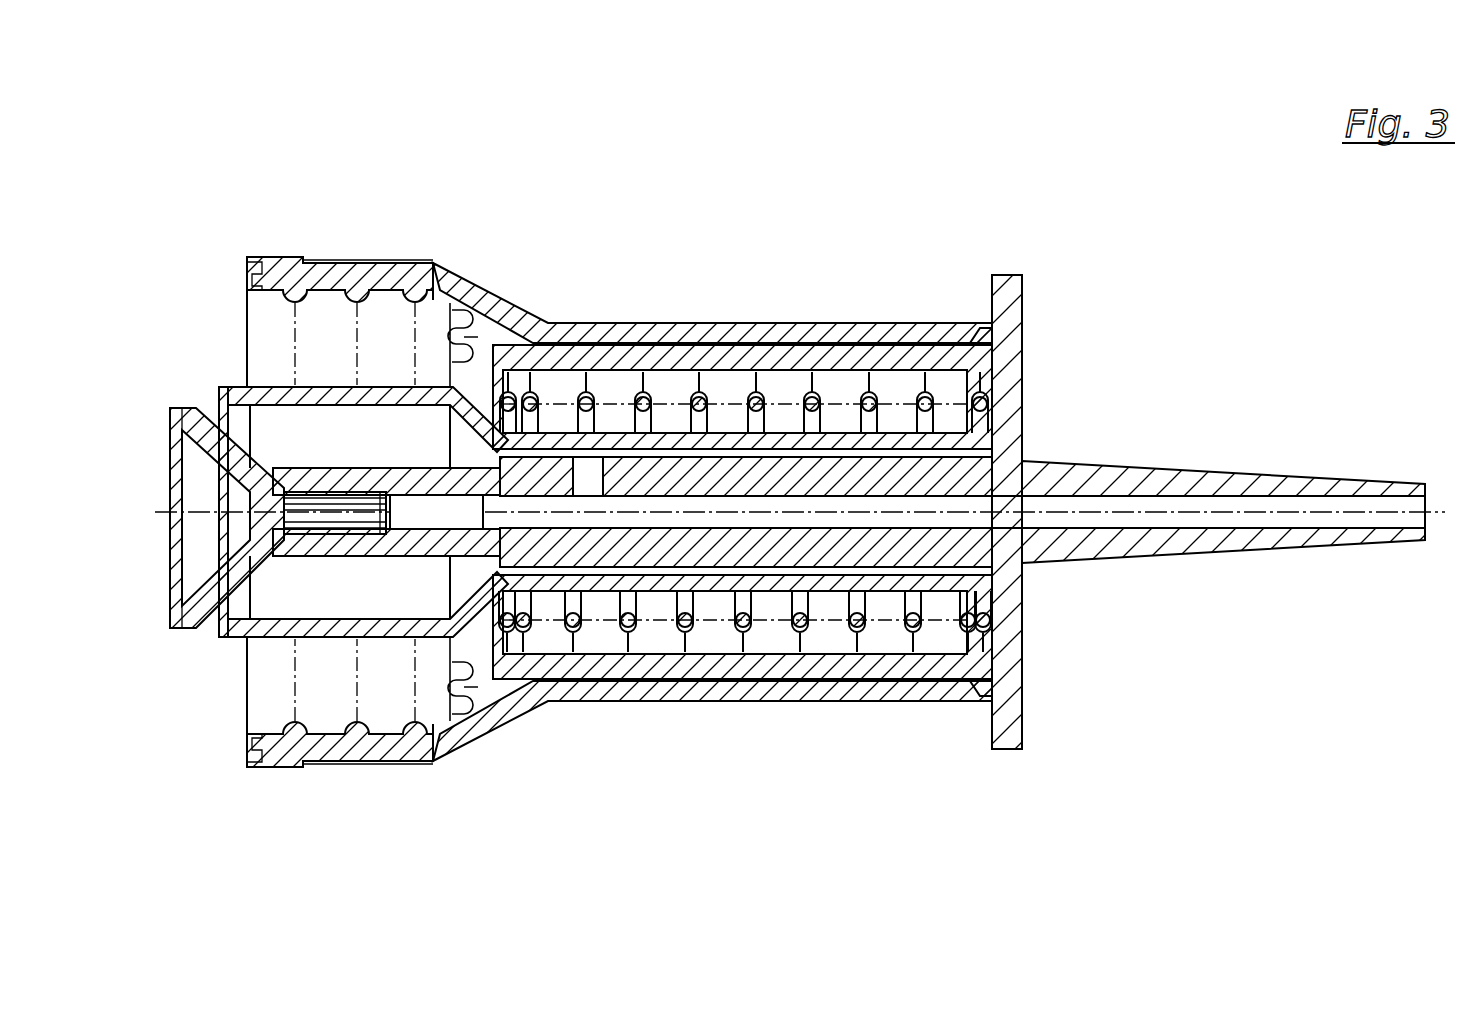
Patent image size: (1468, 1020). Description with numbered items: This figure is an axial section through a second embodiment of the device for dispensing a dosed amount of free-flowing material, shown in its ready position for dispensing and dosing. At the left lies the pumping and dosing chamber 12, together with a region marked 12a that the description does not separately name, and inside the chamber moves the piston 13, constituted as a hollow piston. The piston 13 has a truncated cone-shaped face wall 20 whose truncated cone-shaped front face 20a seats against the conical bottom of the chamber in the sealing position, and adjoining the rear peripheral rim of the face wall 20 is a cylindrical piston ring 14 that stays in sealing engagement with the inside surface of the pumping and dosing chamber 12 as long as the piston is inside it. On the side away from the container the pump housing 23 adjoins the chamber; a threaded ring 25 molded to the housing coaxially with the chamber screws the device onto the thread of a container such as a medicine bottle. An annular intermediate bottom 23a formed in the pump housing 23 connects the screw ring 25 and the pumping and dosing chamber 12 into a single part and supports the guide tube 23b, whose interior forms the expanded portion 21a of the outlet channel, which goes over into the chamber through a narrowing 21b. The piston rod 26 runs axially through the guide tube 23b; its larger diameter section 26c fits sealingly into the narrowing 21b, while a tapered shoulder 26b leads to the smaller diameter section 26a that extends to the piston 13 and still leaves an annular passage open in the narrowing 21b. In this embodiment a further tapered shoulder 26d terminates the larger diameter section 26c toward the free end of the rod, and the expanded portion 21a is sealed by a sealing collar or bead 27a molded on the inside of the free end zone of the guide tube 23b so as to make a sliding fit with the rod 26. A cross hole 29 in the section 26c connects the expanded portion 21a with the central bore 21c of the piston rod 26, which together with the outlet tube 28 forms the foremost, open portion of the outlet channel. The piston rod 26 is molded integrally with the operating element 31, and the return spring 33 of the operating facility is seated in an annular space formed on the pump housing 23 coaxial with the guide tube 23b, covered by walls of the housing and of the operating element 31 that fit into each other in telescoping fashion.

The pumping and dosing chamber 12 is at (295, 640).
The housing threaded portion 12a is at (470, 600).
The piston 13 is at (155, 392).
The cylindrical piston ring 14 is at (183, 630).
The truncated cone-shaped face wall 20 is at (214, 390).
The truncated cone-shaped front face 20a is at (250, 622).
The expanded portion of the outlet channel 21a is at (785, 462).
The narrowing 21b is at (557, 460).
The central bore of the piston rod 21c is at (985, 500).
The pump housing 23 is at (488, 266).
The annular intermediate bottom 23a is at (483, 670).
The guide tube 23b is at (720, 600).
The threaded ring 25 is at (322, 266).
The piston rod 26 is at (887, 462).
The smaller diameter section of the piston rod 26a is at (400, 458).
The tapered shoulder 26b is at (522, 452).
The larger diameter section of the piston rod 26c is at (560, 652).
The tapered shoulder 26d is at (597, 443).
The sealing collar or bead 27a is at (1023, 402).
The outlet tube 28 is at (1168, 478).
The cross hole 29 is at (575, 478).
The operating element 31 is at (1015, 655).
The return spring 33 is at (806, 628).